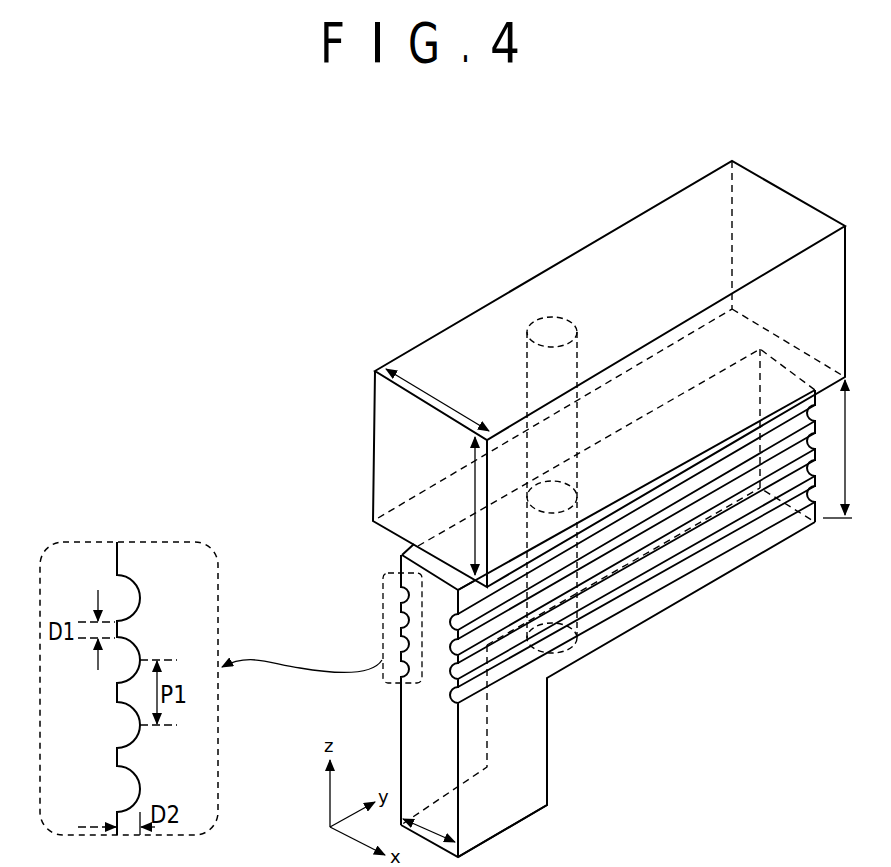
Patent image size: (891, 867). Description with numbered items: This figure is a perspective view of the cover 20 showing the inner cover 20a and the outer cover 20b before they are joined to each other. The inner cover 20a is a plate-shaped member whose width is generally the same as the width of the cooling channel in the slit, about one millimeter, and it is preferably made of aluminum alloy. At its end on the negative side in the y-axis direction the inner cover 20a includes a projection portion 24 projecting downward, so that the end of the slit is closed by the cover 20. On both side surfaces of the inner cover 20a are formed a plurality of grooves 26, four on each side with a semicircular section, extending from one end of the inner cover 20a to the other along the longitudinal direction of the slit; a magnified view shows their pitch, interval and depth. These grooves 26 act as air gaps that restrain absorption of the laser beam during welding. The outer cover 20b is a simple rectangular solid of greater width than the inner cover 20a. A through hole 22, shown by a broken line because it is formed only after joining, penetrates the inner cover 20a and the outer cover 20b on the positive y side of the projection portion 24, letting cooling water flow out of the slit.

The cover 20 is at (307, 492).
The inner cover 20a is at (401, 570).
The outer cover 20b is at (373, 513).
The through hole 22 is at (537, 320).
The projection portion 24 is at (547, 680).
The grooves 26 is at (399, 642).